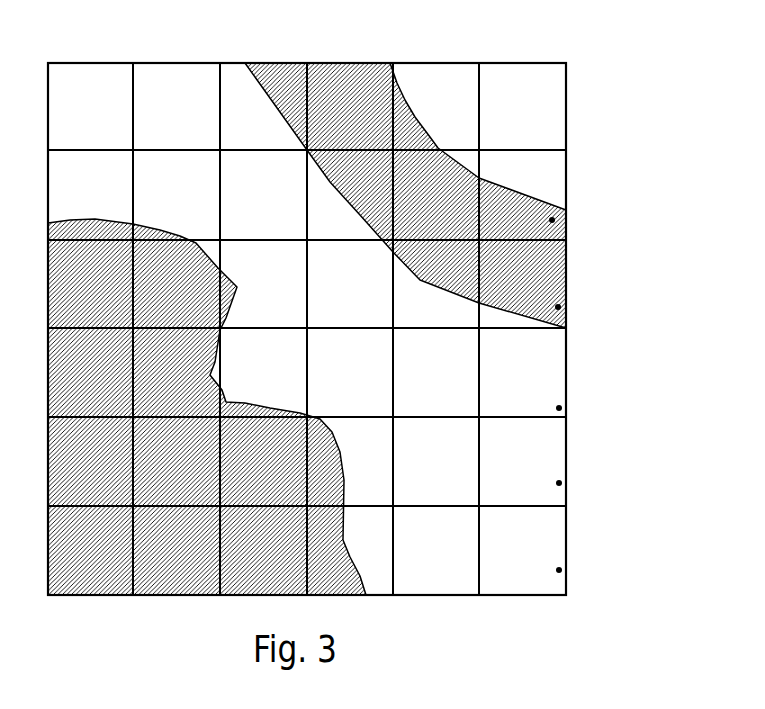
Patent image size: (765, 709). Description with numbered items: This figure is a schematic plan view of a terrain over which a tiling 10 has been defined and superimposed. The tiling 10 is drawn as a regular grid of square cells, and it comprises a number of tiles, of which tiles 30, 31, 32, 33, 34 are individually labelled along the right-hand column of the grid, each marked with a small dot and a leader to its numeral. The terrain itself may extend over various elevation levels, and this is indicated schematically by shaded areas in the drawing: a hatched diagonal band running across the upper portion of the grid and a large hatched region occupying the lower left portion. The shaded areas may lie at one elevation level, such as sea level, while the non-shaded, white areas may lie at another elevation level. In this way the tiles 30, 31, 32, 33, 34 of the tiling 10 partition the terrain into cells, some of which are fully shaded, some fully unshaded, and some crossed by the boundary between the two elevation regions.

The tiling 10 is at (574, 111).
The tile 30 is at (565, 207).
The tile 31 is at (565, 300).
The tile 32 is at (562, 405).
The tile 33 is at (562, 480).
The tile 34 is at (562, 568).